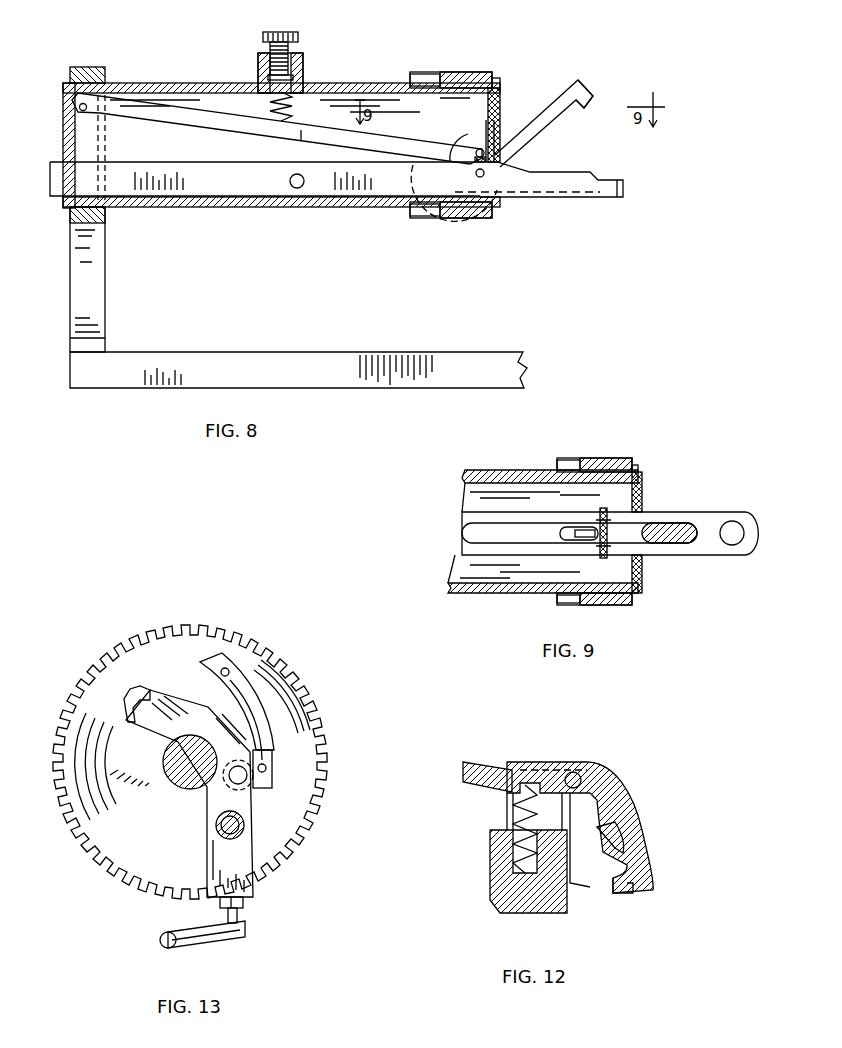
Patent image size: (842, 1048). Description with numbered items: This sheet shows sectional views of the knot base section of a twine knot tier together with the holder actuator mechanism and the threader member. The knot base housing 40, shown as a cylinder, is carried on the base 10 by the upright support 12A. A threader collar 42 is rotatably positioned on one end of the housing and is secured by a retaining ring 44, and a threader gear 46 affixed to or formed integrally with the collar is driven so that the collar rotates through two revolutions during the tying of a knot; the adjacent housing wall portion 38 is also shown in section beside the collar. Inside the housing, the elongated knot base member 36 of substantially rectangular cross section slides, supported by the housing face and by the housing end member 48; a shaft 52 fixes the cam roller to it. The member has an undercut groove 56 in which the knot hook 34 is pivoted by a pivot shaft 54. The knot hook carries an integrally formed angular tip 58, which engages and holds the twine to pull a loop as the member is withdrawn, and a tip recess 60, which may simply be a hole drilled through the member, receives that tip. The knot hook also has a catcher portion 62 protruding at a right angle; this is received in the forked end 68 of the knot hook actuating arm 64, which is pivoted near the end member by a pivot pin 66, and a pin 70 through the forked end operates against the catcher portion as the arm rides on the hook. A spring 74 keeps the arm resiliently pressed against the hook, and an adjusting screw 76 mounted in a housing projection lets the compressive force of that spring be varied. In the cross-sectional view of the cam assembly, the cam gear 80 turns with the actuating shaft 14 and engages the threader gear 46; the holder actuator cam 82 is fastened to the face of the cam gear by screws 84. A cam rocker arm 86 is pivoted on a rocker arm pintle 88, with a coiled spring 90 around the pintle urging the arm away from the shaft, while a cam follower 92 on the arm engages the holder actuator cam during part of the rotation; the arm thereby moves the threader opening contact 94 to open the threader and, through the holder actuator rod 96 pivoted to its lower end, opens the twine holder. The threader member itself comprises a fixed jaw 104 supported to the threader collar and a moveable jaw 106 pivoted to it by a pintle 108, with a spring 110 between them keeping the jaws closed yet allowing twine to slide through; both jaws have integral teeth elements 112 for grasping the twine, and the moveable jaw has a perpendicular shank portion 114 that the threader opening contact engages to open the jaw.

In FIG. 8, the base 10 is at (380, 358).
In FIG. 8, the upright support 12A is at (100, 310).
In FIG. 13, the actuating shaft 14 is at (182, 777).
In FIG. 8, the knot hook 34 is at (552, 151).
In FIG. 9, the knot hook 34 is at (645, 548).
In FIG. 8, the knot base member 36 is at (200, 172).
In FIG. 9, the knot base member 36 is at (712, 515).
In FIG. 8, the housing 38 is at (500, 109).
In FIG. 9, the housing 38 is at (643, 499).
In FIG. 8, the knot base housing 40 is at (309, 206).
In FIG. 8, the threader collar 42 is at (492, 76).
In FIG. 9, the threader collar 42 is at (605, 462).
In FIG. 8, the retaining ring 44 is at (497, 90).
In FIG. 9, the retaining ring 44 is at (639, 478).
In FIG. 8, the threader gear 46 is at (425, 76).
In FIG. 9, the threader gear 46 is at (566, 465).
In FIG. 8, the knot base housing end member 48 is at (63, 132).
In FIG. 8, the shaft 52 is at (290, 181).
In FIG. 8, the pivot shaft 54 is at (486, 176).
In FIG. 9, the undercut groove 56 is at (568, 538).
In FIG. 8, the angular tip 58 is at (583, 92).
In FIG. 8, the tip recess 60 is at (619, 190).
In FIG. 9, the tip recess 60 is at (740, 542).
In FIG. 8, the catcher portion 62 is at (484, 147).
In FIG. 8, the knot hook actuating arm 64 is at (283, 139).
In FIG. 8, the pivot pin 66 is at (104, 86).
In FIG. 8, the forked end 68 is at (471, 148).
In FIG. 9, the forked end 68 is at (563, 520).
In FIG. 8, the pin 70 is at (496, 130).
In FIG. 8, the spring 74 is at (306, 83).
In FIG. 8, the adjusting screw 76 is at (298, 36).
In FIG. 13, the cam gear 80 is at (276, 668).
In FIG. 13, the holder actuator cam 82 is at (258, 705).
In FIG. 13, the screws 84 is at (228, 668).
In FIG. 13, the cam rocker arm 86 is at (205, 715).
In FIG. 13, the rocker arm pintle 88 is at (240, 829).
In FIG. 13, the coiled spring 90 is at (243, 834).
In FIG. 13, the cam follower 92 is at (250, 768).
In FIG. 13, the threader opening contact 94 is at (128, 695).
In FIG. 13, the holder actuator rod 96 is at (245, 935).
In FIG. 12, the fixed jaw 104 is at (502, 910).
In FIG. 12, the moveable jaw 106 is at (632, 840).
In FIG. 12, the pintle 108 is at (579, 774).
In FIG. 12, the spring 110 is at (515, 825).
In FIG. 12, the teeth elements 112 is at (625, 855).
In FIG. 12, the shank portion 114 is at (500, 778).